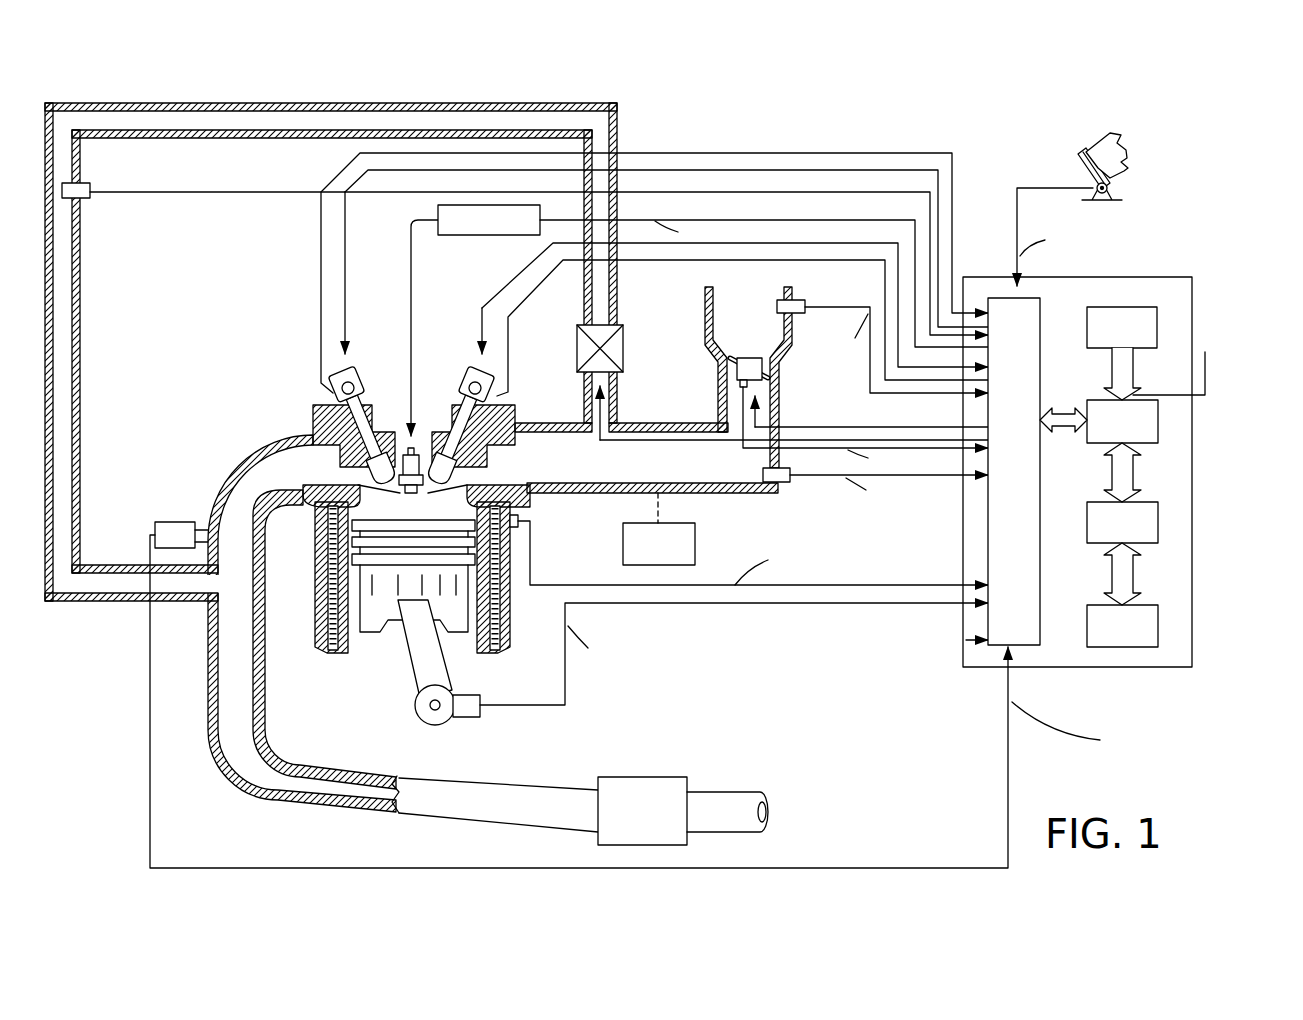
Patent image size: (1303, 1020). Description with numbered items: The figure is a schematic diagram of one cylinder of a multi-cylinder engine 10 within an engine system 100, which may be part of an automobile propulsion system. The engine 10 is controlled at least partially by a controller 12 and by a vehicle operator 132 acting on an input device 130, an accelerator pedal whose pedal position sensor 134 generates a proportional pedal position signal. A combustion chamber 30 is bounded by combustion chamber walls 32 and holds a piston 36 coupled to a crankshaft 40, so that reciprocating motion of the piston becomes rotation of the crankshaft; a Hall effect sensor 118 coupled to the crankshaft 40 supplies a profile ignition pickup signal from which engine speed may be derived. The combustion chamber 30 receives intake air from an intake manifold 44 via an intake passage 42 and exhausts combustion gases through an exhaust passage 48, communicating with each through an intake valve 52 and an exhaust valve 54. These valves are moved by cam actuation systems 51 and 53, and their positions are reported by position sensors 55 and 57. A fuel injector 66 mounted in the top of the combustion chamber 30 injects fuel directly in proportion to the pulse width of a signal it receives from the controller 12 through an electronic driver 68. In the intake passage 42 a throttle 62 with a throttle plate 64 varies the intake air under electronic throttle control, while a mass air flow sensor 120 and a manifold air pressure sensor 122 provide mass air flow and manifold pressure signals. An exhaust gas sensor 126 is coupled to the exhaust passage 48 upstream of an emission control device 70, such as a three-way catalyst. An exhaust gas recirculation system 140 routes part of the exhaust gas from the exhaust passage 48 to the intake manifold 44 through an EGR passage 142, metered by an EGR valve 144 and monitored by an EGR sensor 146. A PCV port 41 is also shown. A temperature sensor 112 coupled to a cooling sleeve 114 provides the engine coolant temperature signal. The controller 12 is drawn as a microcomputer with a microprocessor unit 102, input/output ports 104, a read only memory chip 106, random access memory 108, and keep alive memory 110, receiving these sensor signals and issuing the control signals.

The engine 10 is at (250, 358).
The controller 12 is at (1125, 460).
The combustion chamber 30 is at (387, 507).
The combustion chamber walls 32 is at (357, 642).
The piston 36 is at (395, 604).
The crankshaft 40 is at (427, 723).
The PCV port 41 is at (659, 529).
The intake passage 42 is at (760, 334).
The intake manifold 44 is at (697, 473).
The exhaust passage 48 is at (293, 478).
The cam actuation system 51 is at (468, 378).
The intake valve 52 is at (455, 470).
The cam actuation system 53 is at (335, 382).
The exhaust valve 54 is at (362, 466).
The position sensor 55 is at (498, 394).
The position sensor 57 is at (328, 390).
The throttle 62 is at (765, 366).
The throttle plate 64 is at (730, 364).
The fuel injector 66 is at (418, 448).
The electronic driver 68 is at (520, 237).
The emission control device 70 is at (655, 822).
The engine system 100 is at (1228, 82).
The microprocessor unit 102 is at (1158, 413).
The input/output ports 104 is at (1042, 307).
The read only memory chip 106 is at (1158, 325).
The random access memory 108 is at (1158, 520).
The keep alive memory 110 is at (1158, 622).
The temperature sensor 112 is at (518, 530).
The cooling sleeve 114 is at (502, 618).
The Hall effect sensor 118 is at (470, 717).
The mass air flow sensor 120 is at (797, 300).
The manifold air pressure sensor 122 is at (790, 484).
The exhaust gas sensor 126 is at (156, 525).
The input device 130 is at (1137, 200).
The vehicle operator 132 is at (1132, 148).
The pedal position sensor 134 is at (1112, 188).
The exhaust gas recirculation system 140 is at (484, 92).
The EGR passage 142 is at (329, 104).
The EGR valve 144 is at (624, 346).
The EGR sensor 146 is at (88, 198).